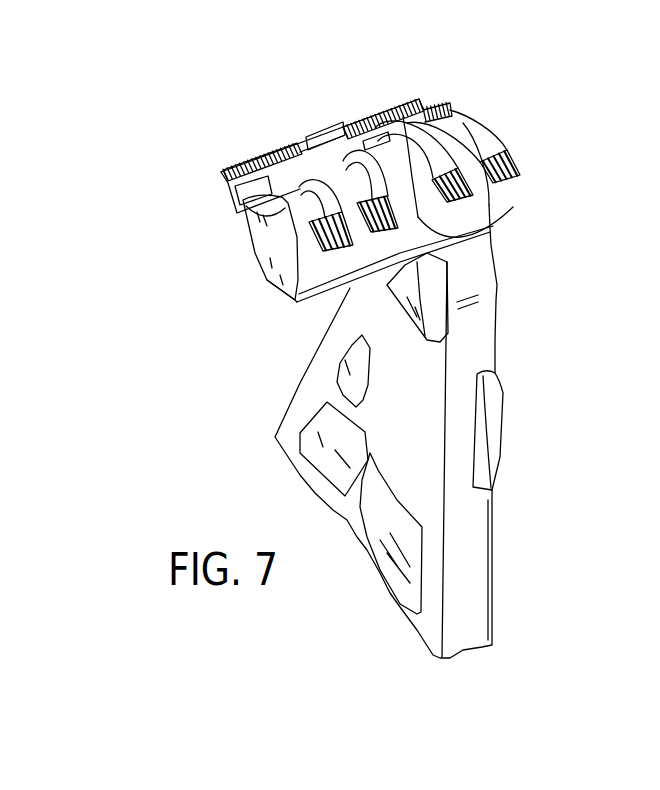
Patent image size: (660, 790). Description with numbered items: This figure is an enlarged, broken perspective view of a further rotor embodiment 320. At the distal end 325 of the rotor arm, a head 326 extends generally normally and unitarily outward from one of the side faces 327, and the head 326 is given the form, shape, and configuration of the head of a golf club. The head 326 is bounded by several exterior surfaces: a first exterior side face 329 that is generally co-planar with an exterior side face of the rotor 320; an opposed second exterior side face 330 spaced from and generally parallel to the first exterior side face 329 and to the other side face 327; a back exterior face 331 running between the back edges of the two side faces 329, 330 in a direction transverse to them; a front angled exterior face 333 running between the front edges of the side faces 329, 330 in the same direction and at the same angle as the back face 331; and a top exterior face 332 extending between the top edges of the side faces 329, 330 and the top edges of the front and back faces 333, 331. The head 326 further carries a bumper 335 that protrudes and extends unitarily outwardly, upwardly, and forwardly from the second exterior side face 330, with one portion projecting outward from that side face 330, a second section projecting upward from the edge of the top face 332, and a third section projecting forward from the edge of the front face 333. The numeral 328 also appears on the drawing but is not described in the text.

The rotor 320 is at (572, 257).
The distal end 325 is at (477, 337).
The head 326 is at (522, 203).
The side face 327 is at (365, 302).
The clamp arms 328 is at (273, 170).
The first exterior side face 329 is at (503, 208).
The second exterior side face 330 is at (290, 297).
The back exterior face 331 is at (325, 148).
The top exterior face 332 is at (352, 125).
The front angled exterior face 333 is at (493, 236).
The bumper 335 is at (243, 238).